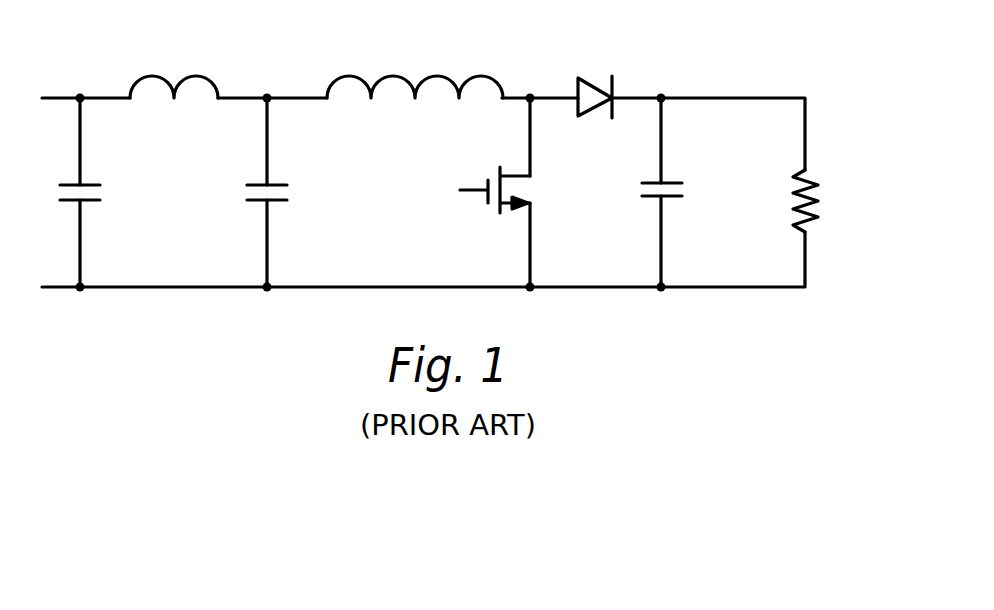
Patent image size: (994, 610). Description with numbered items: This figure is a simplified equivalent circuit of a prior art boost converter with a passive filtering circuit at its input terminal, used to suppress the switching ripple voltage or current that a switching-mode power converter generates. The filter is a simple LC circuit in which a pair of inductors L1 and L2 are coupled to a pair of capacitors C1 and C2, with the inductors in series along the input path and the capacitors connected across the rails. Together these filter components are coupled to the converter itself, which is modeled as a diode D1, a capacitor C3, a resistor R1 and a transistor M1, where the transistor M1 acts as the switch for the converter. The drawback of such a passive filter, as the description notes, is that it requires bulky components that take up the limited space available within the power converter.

The inductor L1 is at (170, 76).
The inductor L2 is at (400, 76).
The diode D1 is at (590, 80).
The capacitor C1 is at (281, 201).
The capacitor C2 is at (94, 201).
The capacitor C3 is at (674, 197).
The transistor M1 is at (530, 190).
The resistor R1 is at (812, 208).